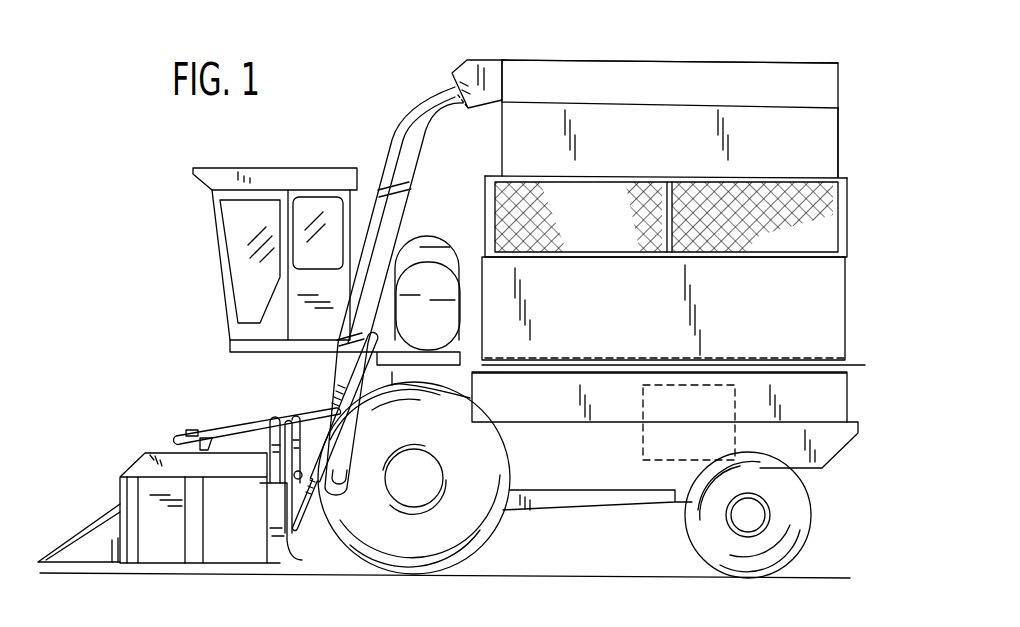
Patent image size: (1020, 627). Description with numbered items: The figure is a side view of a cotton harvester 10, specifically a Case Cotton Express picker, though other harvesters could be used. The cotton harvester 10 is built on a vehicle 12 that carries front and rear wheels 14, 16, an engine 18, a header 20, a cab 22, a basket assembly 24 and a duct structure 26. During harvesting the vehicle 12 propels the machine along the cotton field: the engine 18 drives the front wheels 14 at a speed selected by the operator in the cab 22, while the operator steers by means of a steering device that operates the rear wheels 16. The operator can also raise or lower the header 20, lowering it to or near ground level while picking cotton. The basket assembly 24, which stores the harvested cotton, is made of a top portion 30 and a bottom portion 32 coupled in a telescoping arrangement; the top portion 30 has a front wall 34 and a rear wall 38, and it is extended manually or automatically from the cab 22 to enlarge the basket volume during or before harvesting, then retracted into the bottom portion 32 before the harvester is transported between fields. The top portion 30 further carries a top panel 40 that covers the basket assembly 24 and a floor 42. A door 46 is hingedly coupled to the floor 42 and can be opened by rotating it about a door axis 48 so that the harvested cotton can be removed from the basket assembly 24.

The cotton harvester 10 is at (148, 257).
The vehicle 12 is at (568, 500).
The front wheels 14 is at (458, 522).
The rear wheels 16 is at (800, 502).
The engine 18 is at (640, 449).
The header 20 is at (127, 460).
The cab 22 is at (235, 221).
The basket assembly 24 is at (855, 106).
The duct structure 26 is at (397, 122).
The top portion 30 is at (855, 158).
The bottom portion 32 is at (855, 305).
The front wall 34 is at (502, 157).
The rear wall 38 is at (840, 177).
The top panel 40 is at (570, 60).
The floor 42 is at (742, 358).
The door 46 is at (614, 312).
The door axis 48 is at (850, 360).